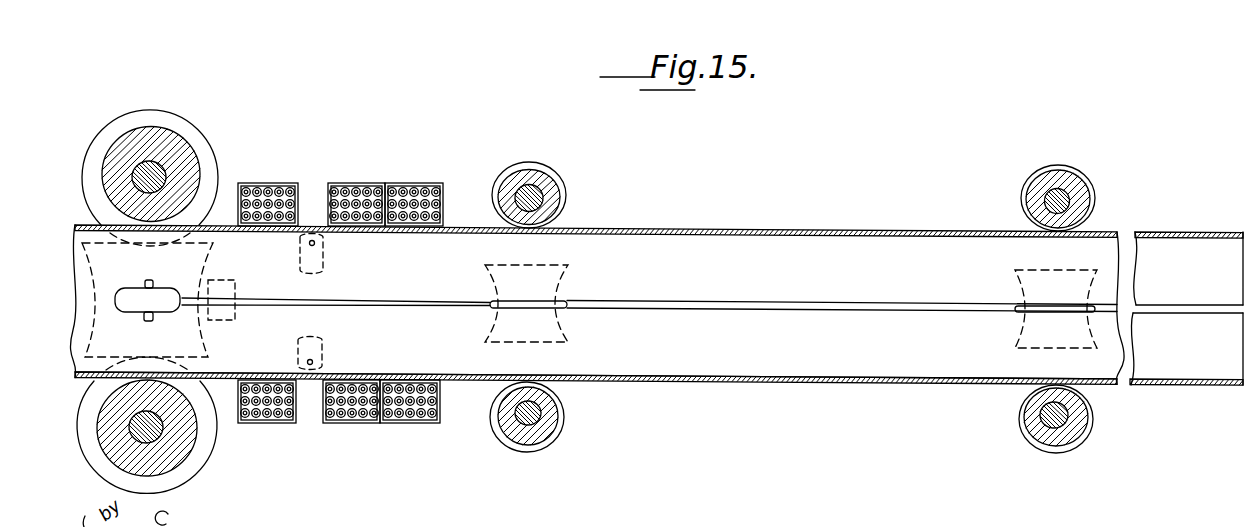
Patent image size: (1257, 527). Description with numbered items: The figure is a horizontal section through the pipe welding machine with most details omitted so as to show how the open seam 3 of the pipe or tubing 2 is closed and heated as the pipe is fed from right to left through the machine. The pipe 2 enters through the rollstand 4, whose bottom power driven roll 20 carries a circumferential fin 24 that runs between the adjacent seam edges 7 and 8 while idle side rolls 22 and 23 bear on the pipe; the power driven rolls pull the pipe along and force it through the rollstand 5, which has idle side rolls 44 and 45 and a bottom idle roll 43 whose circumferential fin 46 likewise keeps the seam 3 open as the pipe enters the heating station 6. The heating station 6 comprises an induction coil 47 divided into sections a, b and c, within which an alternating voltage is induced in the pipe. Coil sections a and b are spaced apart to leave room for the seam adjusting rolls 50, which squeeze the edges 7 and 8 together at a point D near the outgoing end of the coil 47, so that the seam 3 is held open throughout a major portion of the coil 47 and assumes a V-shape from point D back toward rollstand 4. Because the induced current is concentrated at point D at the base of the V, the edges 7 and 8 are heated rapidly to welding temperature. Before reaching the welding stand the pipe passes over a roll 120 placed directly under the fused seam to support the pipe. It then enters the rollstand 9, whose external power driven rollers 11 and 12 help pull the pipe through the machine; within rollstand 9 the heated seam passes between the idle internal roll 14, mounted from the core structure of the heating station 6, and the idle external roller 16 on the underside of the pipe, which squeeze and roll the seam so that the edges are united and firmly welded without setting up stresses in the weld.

The pipe or tubing 2 is at (222, 381).
The seam 3 is at (1212, 305).
The rollstand 4 is at (1065, 141).
The rollstand 5 is at (539, 151).
The heating station 6 is at (364, 153).
The edge of the pipe seam 7 is at (1169, 305).
The edge of the pipe seam 8 is at (1199, 313).
The rollstand 9 is at (162, 98).
The power driven roller 11 is at (206, 146).
The power driven roller 12 is at (207, 463).
The idle internal roll 14 is at (122, 314).
The external roller 16 is at (210, 345).
The bottom power driven roll 20 is at (1020, 331).
The idle side roll 22 is at (1027, 201).
The idle side roll 23 is at (1026, 430).
The circumferential fin 24 is at (1015, 309).
The bottom idle roll 43 is at (570, 340).
The idle side roll 44 is at (561, 200).
The idle side roll 45 is at (565, 430).
The circumferential fin 46 is at (567, 307).
The induction coil 47 is at (337, 183).
The seam adjusting roll 50 is at (324, 258).
The roll 120 is at (230, 279).
The coil section a is at (270, 183).
The coil section b is at (372, 183).
The coil section c is at (420, 183).
The point D is at (272, 300).